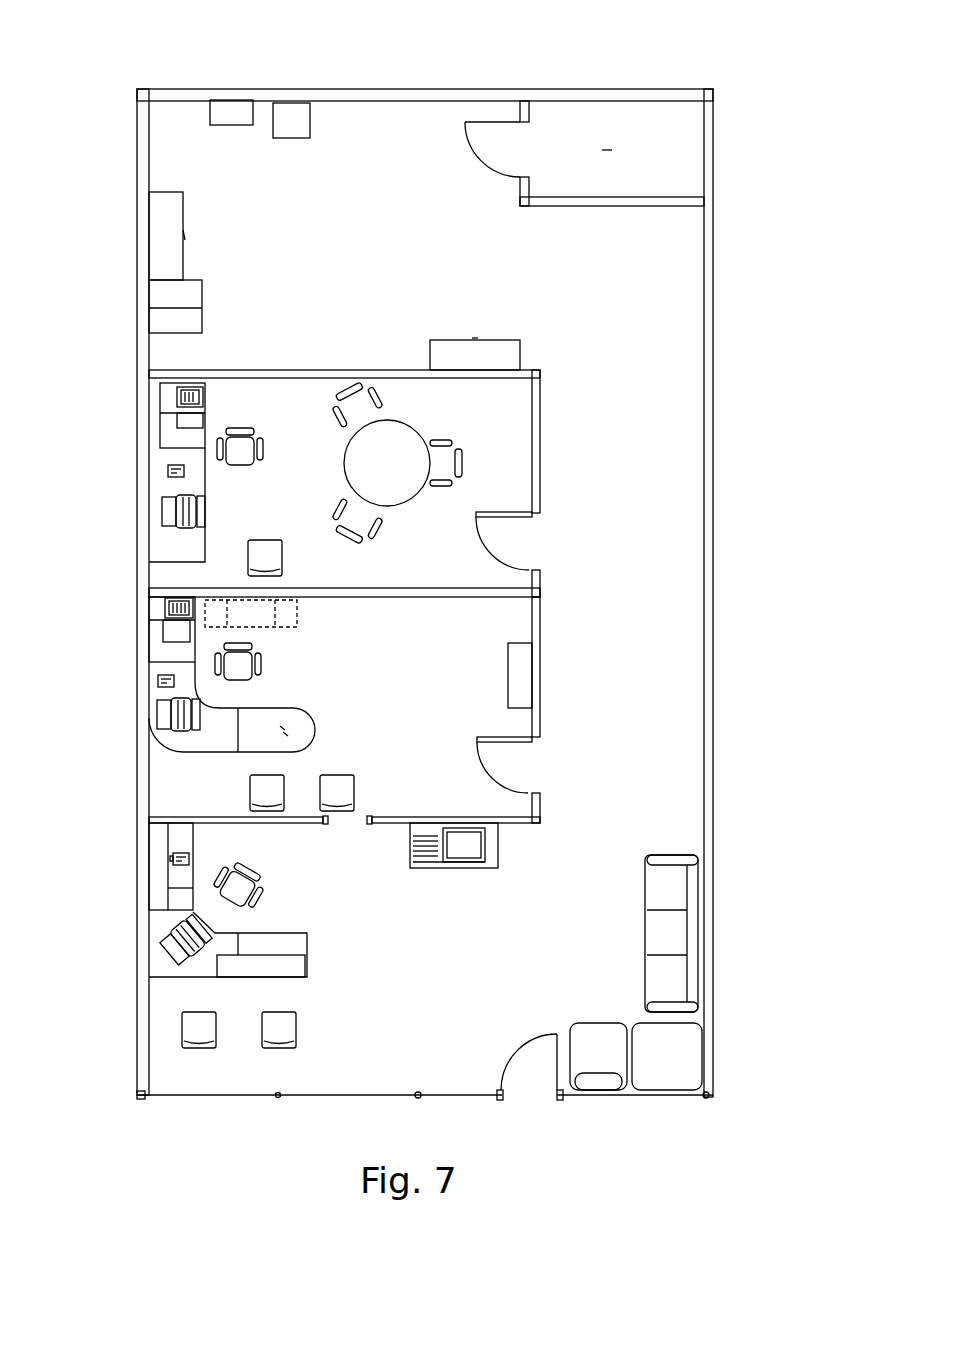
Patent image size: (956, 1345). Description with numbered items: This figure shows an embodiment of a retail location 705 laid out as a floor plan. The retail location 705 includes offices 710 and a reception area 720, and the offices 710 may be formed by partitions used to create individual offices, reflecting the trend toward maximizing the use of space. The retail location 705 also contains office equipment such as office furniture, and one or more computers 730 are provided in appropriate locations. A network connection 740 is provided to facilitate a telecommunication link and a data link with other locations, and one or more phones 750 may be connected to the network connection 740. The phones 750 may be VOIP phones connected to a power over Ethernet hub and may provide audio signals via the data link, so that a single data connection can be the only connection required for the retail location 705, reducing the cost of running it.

The retail location 705 is at (565, 44).
The offices 710 is at (510, 414).
The reception area 720 is at (340, 1058).
The computers 730 is at (160, 500).
The network connection 740 is at (241, 157).
The phones 750 is at (157, 677).